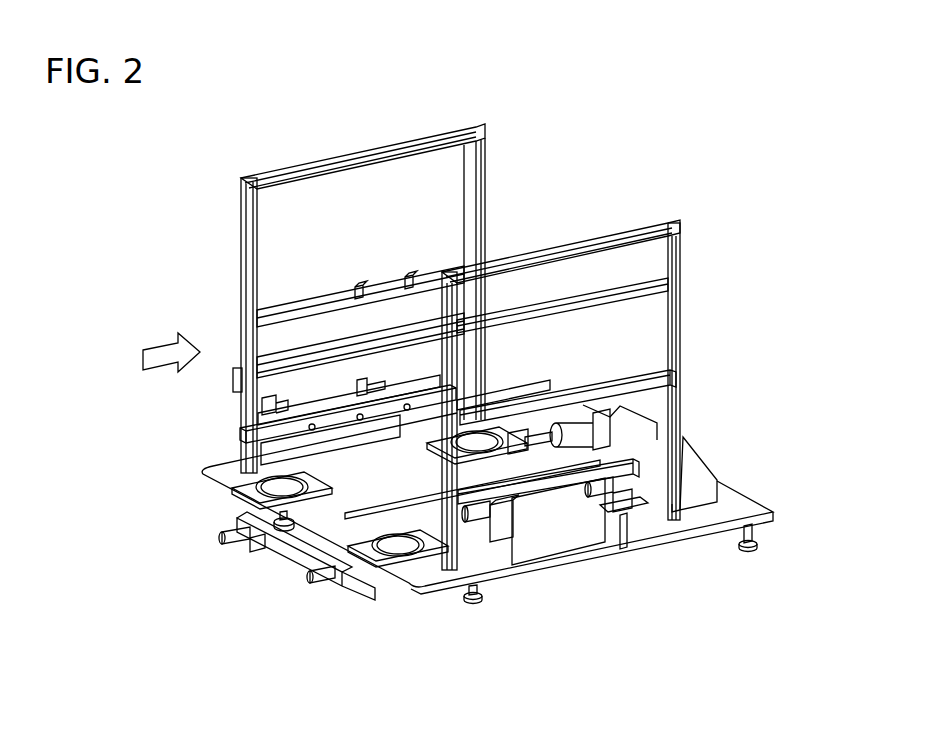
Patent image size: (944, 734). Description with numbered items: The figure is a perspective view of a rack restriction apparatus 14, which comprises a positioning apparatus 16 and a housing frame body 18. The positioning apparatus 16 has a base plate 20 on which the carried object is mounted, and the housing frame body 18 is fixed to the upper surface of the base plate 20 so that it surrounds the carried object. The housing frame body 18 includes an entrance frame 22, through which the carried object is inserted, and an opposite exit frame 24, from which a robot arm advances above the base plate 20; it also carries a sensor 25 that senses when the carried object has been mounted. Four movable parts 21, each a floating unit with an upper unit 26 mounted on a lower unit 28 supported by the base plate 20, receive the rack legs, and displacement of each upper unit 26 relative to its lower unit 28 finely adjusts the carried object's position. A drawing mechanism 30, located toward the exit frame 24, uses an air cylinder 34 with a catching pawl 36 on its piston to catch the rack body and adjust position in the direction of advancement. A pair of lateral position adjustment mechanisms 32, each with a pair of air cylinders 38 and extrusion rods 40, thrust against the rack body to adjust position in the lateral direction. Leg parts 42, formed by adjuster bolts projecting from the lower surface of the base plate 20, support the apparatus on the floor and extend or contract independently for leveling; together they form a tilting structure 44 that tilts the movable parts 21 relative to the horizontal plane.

The rack restriction apparatus 14 is at (460, 716).
The positioning apparatus 16 is at (759, 446).
The housing frame body 18 is at (712, 306).
The base plate 20 is at (760, 495).
The movable part 21 is at (457, 460).
The entrance frame 22 is at (241, 313).
The exit frame 24 is at (485, 170).
The sensor 25 is at (357, 286).
The upper unit 26 is at (257, 545).
The lower unit 28 is at (320, 552).
The drawing mechanism 30 is at (605, 403).
The lateral position adjustment mechanism 32 is at (317, 391).
The air cylinder 34 is at (586, 418).
The catching pawl 36 is at (505, 425).
The air cylinder 38 is at (261, 410).
The extrusion rod 40 is at (242, 432).
The leg part 42 is at (282, 530).
The tilting structure 44 is at (785, 548).